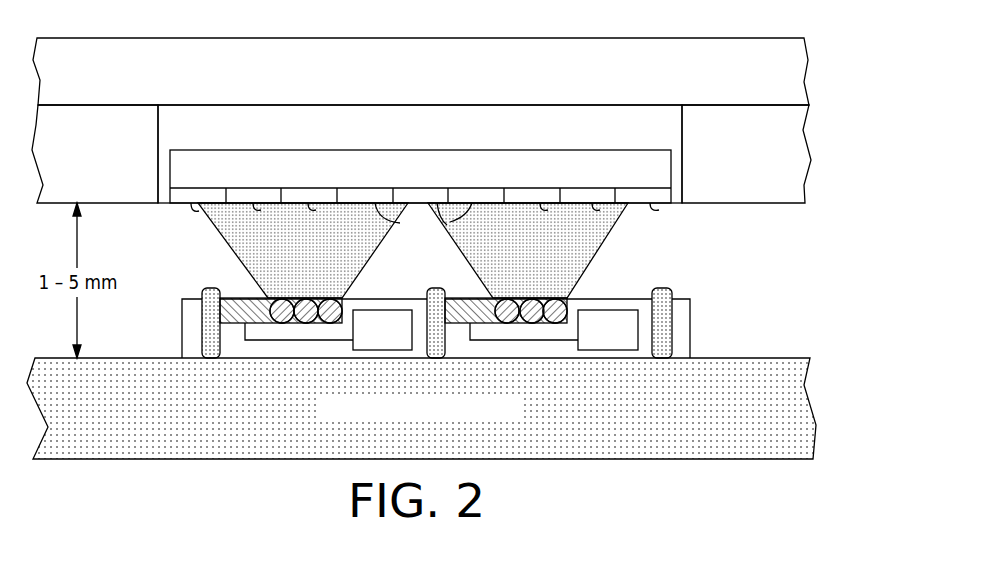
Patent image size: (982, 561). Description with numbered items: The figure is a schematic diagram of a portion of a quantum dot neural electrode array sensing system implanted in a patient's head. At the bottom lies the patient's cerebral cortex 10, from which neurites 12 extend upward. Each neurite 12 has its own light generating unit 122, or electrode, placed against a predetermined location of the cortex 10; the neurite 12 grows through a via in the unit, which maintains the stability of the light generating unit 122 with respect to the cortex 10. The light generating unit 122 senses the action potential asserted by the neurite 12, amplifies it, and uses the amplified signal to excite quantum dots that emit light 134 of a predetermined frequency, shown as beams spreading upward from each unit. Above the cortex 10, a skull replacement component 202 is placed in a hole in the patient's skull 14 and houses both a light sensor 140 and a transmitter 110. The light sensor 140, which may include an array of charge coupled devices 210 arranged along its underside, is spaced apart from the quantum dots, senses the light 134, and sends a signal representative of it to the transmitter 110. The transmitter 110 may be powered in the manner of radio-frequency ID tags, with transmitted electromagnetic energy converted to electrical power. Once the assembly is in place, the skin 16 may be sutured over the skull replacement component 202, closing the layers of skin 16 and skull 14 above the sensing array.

The cortex 10 is at (201, 418).
The neurite 12 is at (209, 290).
The skull 14 is at (106, 190).
The skin 16 is at (121, 81).
The transmitter 110 is at (234, 180).
The light generating unit 122 is at (376, 299).
The light 134 is at (328, 260).
The light sensor 140 is at (543, 188).
The skull replacement component 202 is at (181, 137).
The charge coupled devices 210 is at (314, 206).